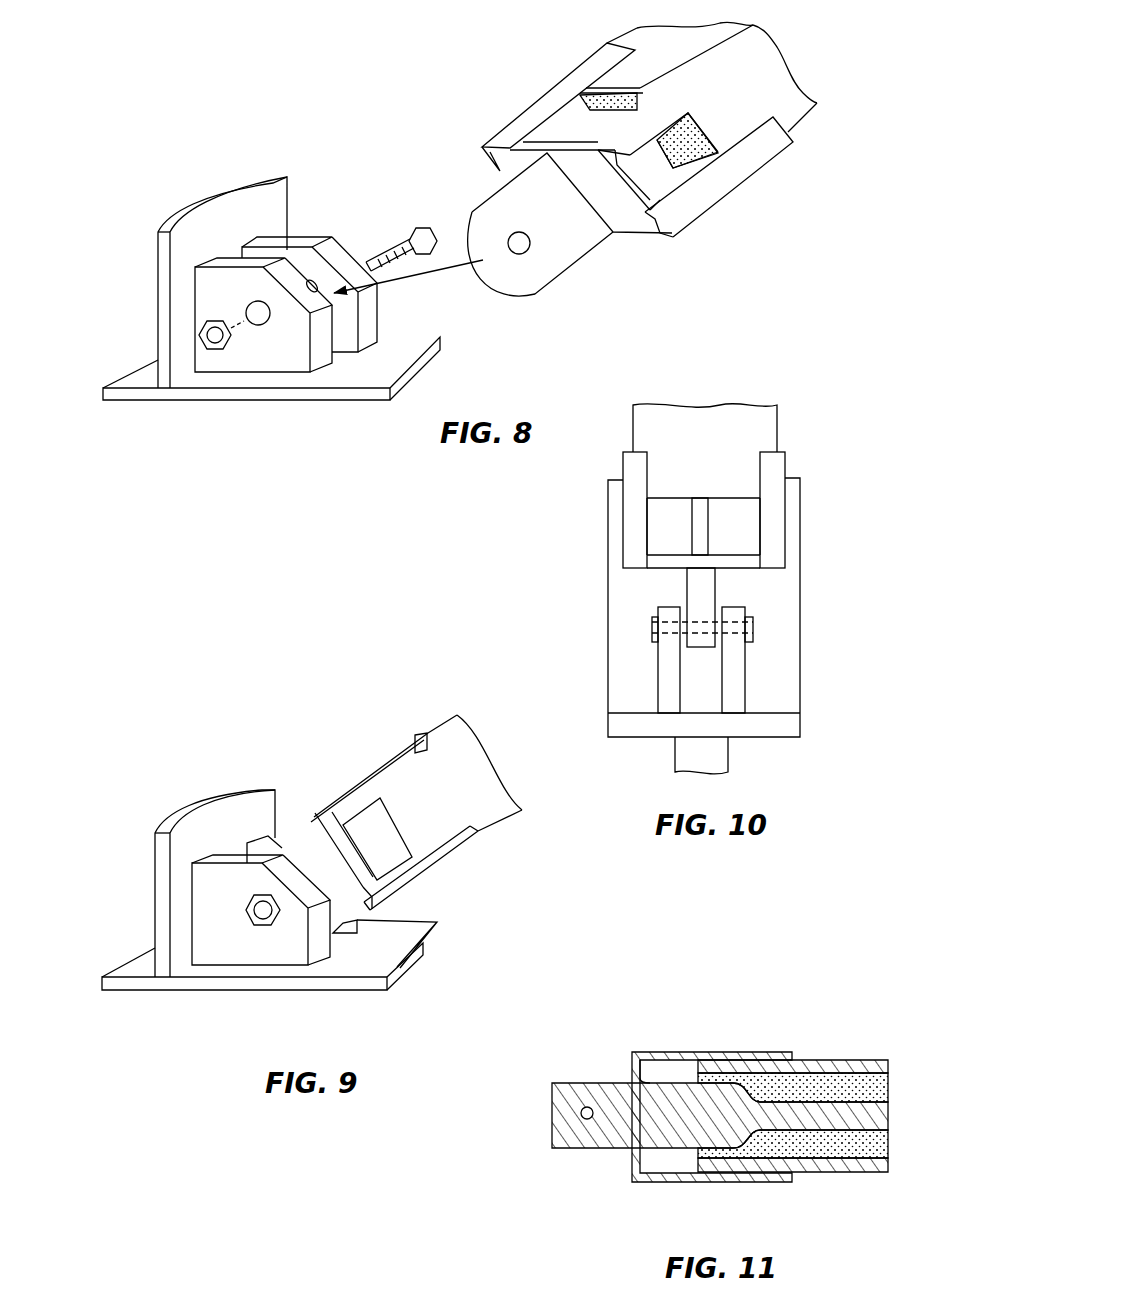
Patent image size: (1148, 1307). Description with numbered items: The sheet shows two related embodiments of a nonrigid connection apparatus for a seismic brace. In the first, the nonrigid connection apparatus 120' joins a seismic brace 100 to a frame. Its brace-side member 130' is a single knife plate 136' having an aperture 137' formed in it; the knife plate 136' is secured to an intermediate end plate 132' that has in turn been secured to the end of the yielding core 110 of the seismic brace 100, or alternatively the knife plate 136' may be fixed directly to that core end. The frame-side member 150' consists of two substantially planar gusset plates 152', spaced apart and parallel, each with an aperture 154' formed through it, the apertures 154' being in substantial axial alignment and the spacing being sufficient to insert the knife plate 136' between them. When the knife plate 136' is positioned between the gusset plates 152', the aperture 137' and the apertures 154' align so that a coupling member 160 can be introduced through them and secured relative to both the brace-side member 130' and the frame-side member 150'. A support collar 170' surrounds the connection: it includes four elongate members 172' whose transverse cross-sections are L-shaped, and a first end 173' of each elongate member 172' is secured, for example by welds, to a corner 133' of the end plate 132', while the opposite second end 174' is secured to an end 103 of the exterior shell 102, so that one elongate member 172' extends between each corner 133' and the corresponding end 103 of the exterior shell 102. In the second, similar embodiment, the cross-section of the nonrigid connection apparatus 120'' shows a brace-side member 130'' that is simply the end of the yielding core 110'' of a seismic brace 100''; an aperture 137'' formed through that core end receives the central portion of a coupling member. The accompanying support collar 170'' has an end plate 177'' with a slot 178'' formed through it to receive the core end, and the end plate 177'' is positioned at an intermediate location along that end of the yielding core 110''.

In FIG. 8, the seismic brace 100 is at (761, 80).
In FIG. 10, the seismic brace 100 is at (842, 405).
In FIG. 9, the seismic brace 100 is at (558, 854).
In FIG. 8, the exterior shell 102 is at (775, 100).
In FIG. 10, the exterior shell 102 is at (718, 440).
In FIG. 9, the exterior shell 102 is at (475, 800).
In FIG. 8, the end of exterior shell 103 is at (753, 24).
In FIG. 10, the end of exterior shell 103 is at (632, 435).
In FIG. 9, the end of exterior shell 103 is at (512, 822).
In FIG. 8, the yielding core 110 is at (718, 182).
In FIG. 10, the yielding core 110 is at (759, 515).
In FIG. 9, the yielding core 110 is at (449, 892).
In FIG. 8, the nonrigid connection apparatus 120' is at (208, 61).
In FIG. 10, the nonrigid connection apparatus 120' is at (890, 434).
In FIG. 9, the nonrigid connection apparatus 120' is at (173, 726).
In FIG. 8, the brace-side member 130' is at (448, 93).
In FIG. 10, the brace-side member 130' is at (767, 626).
In FIG. 9, the brace-side member 130' is at (407, 946).
In FIG. 8, the end plate 132' is at (572, 178).
In FIG. 10, the end plate 132' is at (596, 592).
In FIG. 9, the end plate 132' is at (426, 883).
In FIG. 8, the corner of end plate 133' is at (655, 222).
In FIG. 8, the knife plate 136' is at (570, 242).
In FIG. 10, the knife plate 136' is at (781, 607).
In FIG. 9, the knife plate 136' is at (306, 812).
In FIG. 8, the aperture 137' is at (519, 292).
In FIG. 10, the aperture 137' is at (792, 675).
In FIG. 8, the frame-side member 150' is at (271, 278).
In FIG. 10, the frame-side member 150' is at (568, 698).
In FIG. 9, the frame-side member 150' is at (245, 890).
In FIG. 8, the gusset plate 152' is at (322, 346).
In FIG. 10, the gusset plate 152' is at (706, 700).
In FIG. 9, the gusset plate 152' is at (236, 906).
In FIG. 8, the aperture 154' is at (293, 367).
In FIG. 10, the aperture 154' is at (595, 656).
In FIG. 8, the coupling member 160 is at (423, 230).
In FIG. 10, the coupling member 160 is at (762, 628).
In FIG. 8, the support collar 170' is at (746, 160).
In FIG. 10, the support collar 170' is at (637, 510).
In FIG. 9, the support collar 170' is at (513, 896).
In FIG. 8, the elongate member 172' is at (739, 210).
In FIG. 10, the elongate member 172' is at (573, 537).
In FIG. 9, the elongate member 172' is at (462, 868).
In FIG. 8, the first end of elongate member 173' is at (676, 213).
In FIG. 10, the first end of elongate member 173' is at (573, 579).
In FIG. 9, the first end of elongate member 173' is at (276, 774).
In FIG. 8, the second end of elongate member 174' is at (756, 177).
In FIG. 10, the second end of elongate member 174' is at (580, 464).
In FIG. 9, the second end of elongate member 174' is at (376, 749).
In FIG. 11, the nonrigid connection apparatus 120'' is at (709, 972).
In FIG. 11, the brace-side member 130'' is at (699, 1164).
In FIG. 11, the aperture 137'' is at (545, 1080).
In FIG. 11, the support collar 170'' is at (688, 1161).
In FIG. 11, the end plate 177'' is at (605, 1052).
In FIG. 11, the slot 178'' is at (688, 1035).
In FIG. 11, the seismic brace 100'' is at (793, 1087).
In FIG. 11, the yielding core 110'' is at (793, 1155).